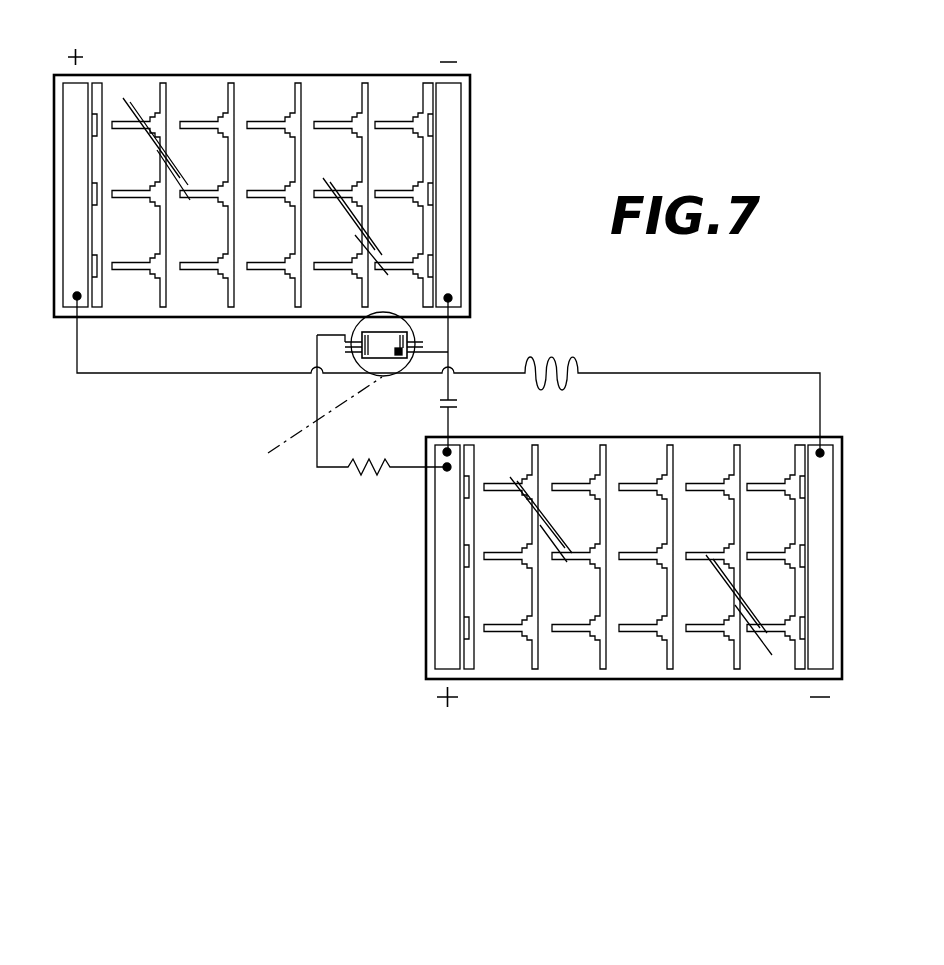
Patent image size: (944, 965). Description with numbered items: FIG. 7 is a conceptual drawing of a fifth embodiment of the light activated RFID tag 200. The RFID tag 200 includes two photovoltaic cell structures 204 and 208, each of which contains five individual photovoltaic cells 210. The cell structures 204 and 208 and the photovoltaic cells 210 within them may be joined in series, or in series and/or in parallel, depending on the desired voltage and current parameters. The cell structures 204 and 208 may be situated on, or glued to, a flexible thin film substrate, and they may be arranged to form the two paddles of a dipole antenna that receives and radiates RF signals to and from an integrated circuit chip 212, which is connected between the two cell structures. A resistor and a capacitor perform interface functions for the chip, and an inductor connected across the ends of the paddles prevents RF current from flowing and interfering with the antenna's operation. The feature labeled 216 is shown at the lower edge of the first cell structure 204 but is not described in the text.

The RFID tag 200 is at (337, 543).
The photovoltaic cell structure 204 is at (260, 78).
The photovoltaic cell structure 208 is at (638, 666).
The photovoltaic cell 210 is at (400, 195).
The integrated circuit chip 212 is at (385, 334).
The panel edge / substrate 216 is at (118, 318).